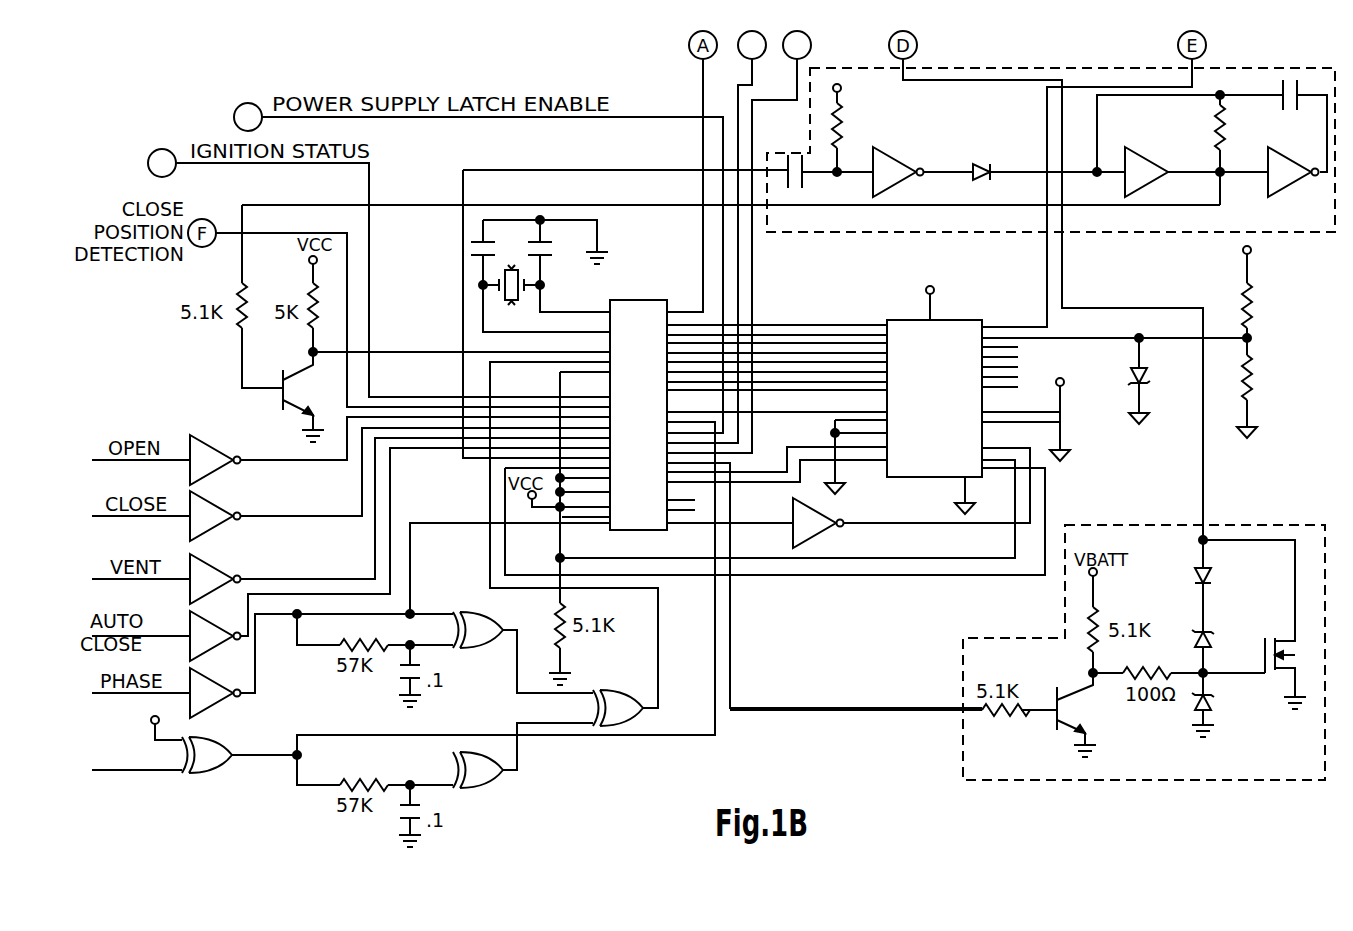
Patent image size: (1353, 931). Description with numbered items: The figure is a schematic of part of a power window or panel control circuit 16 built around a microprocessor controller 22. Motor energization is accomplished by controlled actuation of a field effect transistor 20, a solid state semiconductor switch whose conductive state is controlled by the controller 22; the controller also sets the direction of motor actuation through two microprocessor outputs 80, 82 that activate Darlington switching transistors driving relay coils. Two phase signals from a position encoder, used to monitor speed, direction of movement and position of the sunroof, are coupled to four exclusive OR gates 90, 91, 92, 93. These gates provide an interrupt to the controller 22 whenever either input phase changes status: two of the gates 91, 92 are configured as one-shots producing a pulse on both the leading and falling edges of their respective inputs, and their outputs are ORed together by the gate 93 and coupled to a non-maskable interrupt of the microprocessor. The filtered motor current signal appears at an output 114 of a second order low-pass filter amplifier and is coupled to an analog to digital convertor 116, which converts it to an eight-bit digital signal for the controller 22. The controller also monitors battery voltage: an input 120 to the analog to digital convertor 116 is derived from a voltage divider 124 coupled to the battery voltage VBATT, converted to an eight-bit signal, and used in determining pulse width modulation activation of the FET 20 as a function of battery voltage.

The control circuit 16 is at (573, 88).
The field effect transistor 20 is at (1283, 680).
The microprocessor controller 22 is at (635, 300).
The microprocessor output 80 is at (766, 50).
The microprocessor output 82 is at (809, 38).
The exclusive OR gate 90 is at (225, 772).
The exclusive OR gate 91 is at (477, 622).
The exclusive OR gate 92 is at (490, 782).
The exclusive OR gate 93 is at (628, 720).
The output 114 is at (1090, 86).
The analog to digital convertor 116 is at (922, 332).
The input 120 is at (1030, 341).
The voltage divider 124 is at (1280, 351).